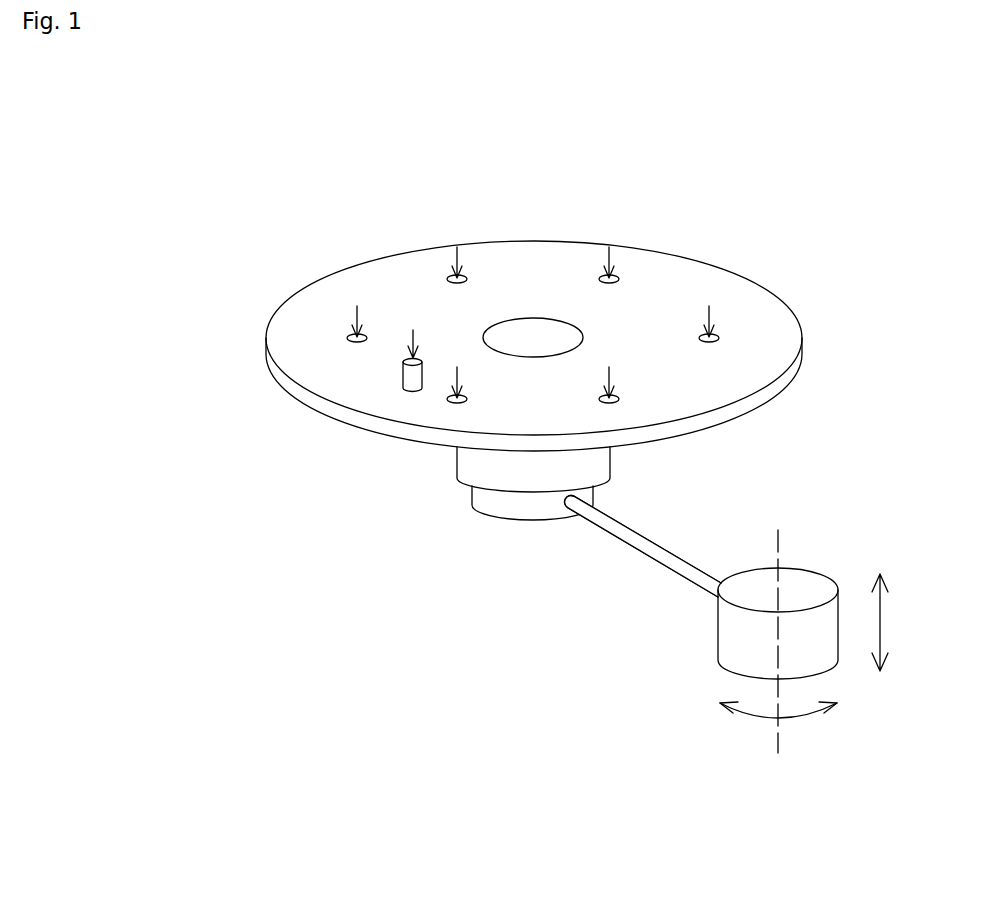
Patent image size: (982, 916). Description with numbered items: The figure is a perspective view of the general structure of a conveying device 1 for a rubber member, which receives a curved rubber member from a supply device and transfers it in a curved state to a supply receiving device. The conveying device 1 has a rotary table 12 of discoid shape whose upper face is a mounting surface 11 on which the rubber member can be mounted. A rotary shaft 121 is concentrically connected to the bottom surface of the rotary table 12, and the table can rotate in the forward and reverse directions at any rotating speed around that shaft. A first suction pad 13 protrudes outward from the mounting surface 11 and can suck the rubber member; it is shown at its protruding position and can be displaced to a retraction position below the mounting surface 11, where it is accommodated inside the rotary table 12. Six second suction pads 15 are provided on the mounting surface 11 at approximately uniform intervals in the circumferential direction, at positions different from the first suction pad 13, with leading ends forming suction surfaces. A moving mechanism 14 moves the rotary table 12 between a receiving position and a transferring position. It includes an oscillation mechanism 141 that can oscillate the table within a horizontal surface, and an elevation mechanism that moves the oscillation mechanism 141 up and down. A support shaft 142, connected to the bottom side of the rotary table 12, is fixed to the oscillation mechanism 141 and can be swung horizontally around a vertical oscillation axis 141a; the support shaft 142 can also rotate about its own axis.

The conveying device 1 is at (547, 485).
The mounting surface 11 is at (360, 384).
The rotary table 12 is at (330, 414).
The rotary shaft 121 is at (468, 470).
The first suction pad 13 is at (406, 358).
The moving mechanism 14 is at (726, 628).
The oscillation mechanism 141 is at (735, 640).
The oscillation axis 141a is at (782, 745).
The support shaft 142 is at (659, 567).
The second suction pad 15 is at (348, 331).